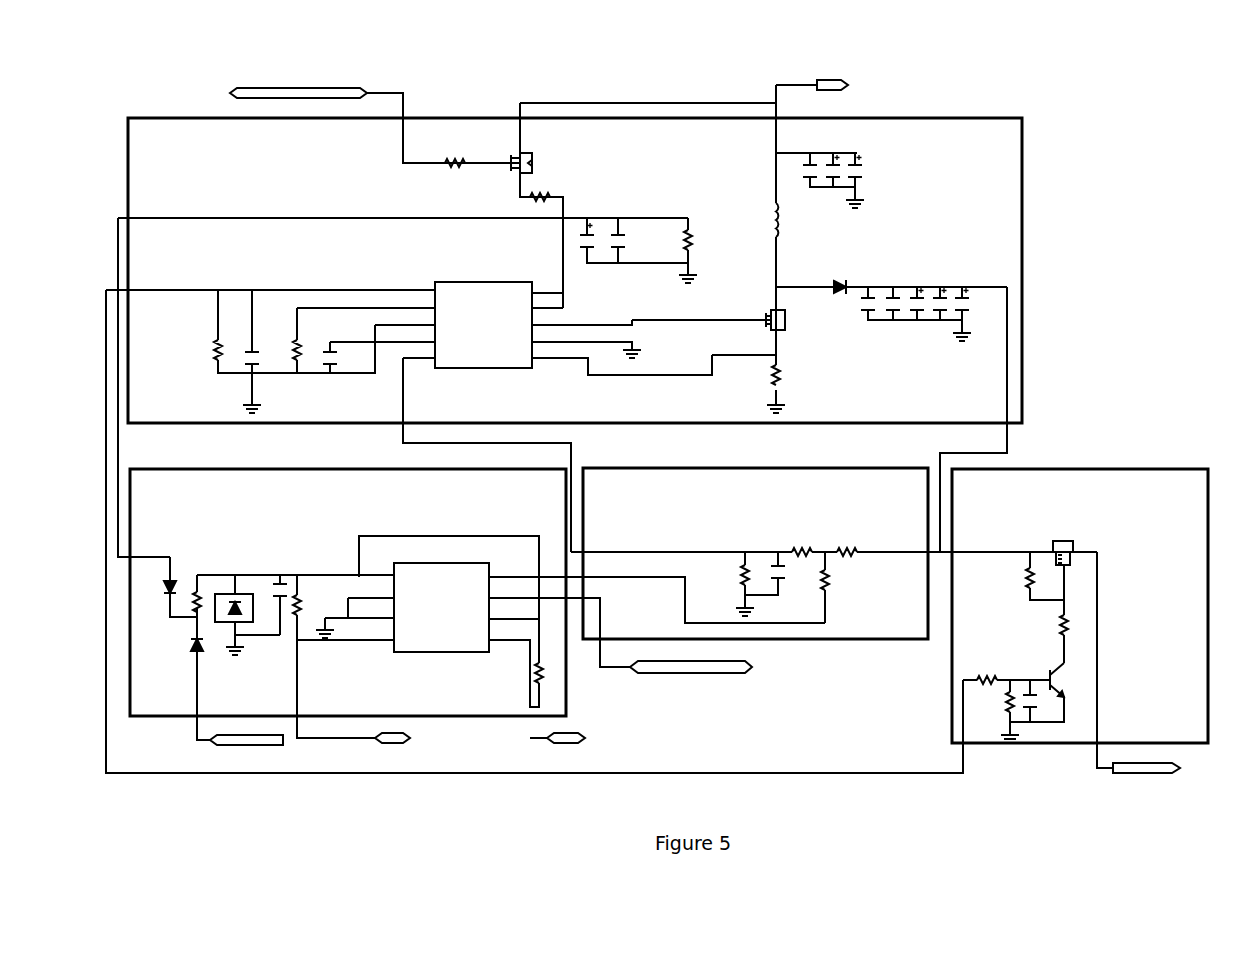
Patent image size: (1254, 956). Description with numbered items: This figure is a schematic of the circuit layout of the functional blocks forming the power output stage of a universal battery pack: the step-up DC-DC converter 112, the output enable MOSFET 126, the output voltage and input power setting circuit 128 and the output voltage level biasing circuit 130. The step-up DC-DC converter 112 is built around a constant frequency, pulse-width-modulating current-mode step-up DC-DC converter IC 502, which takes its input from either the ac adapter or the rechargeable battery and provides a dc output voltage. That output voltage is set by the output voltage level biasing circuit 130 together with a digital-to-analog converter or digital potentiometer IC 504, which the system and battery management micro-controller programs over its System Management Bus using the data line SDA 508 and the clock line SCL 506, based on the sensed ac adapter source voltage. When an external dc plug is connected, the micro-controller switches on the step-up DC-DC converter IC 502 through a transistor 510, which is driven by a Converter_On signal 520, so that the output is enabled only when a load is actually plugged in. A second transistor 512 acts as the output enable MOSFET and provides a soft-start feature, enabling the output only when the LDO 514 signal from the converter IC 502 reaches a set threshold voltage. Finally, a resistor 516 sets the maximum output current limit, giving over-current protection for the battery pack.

The step-up DC-DC converter 112 is at (1022, 218).
The output enable MOSFET 126 is at (1045, 470).
The output voltage and input power setting circuit 128 is at (167, 722).
The output voltage level biasing circuit 130 is at (792, 639).
The step-up DC-DC converter IC 502 is at (467, 283).
The digital-to-analog converter or digital potentiometer IC 504 is at (437, 636).
The SMBus clock line (SCL) 506 is at (397, 738).
The SMBus data line (SDA) 508 is at (563, 738).
The transistor 510 is at (502, 150).
The transistor 512 is at (1078, 528).
The LDO 514 is at (350, 283).
The resistor 516 is at (838, 367).
The Converter_On signal 520 is at (228, 93).